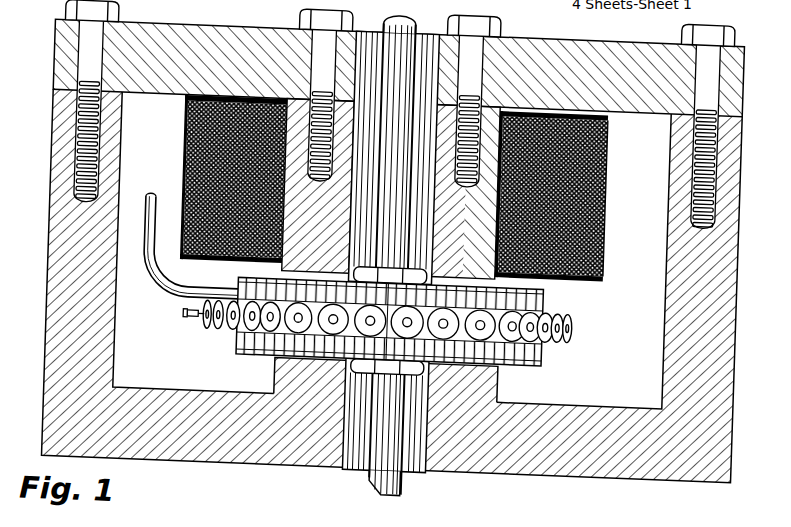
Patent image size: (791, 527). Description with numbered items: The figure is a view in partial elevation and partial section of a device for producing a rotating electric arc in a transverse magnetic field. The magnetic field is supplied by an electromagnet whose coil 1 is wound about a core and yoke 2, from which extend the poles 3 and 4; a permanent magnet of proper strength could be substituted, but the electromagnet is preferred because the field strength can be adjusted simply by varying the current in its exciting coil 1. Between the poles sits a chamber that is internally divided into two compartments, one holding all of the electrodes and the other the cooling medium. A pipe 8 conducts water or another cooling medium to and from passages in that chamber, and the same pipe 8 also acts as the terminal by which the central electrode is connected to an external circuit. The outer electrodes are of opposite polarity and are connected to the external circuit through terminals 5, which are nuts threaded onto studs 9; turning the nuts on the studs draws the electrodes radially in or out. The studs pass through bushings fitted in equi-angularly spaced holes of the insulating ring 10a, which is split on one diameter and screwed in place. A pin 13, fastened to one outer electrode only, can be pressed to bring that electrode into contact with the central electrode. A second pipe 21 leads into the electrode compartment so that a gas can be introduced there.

The coil of an electromagnet 1 is at (189, 121).
The core and yoke 2 is at (61, 136).
The pole 3 is at (247, 262).
The pole 4 is at (497, 366).
The terminals 5 is at (450, 312).
The pipe 8 is at (413, 8).
The threaded studs 9 is at (415, 302).
The ring of insulating material 10a is at (274, 346).
The pin 13 is at (193, 304).
The pipe 21 is at (161, 200).